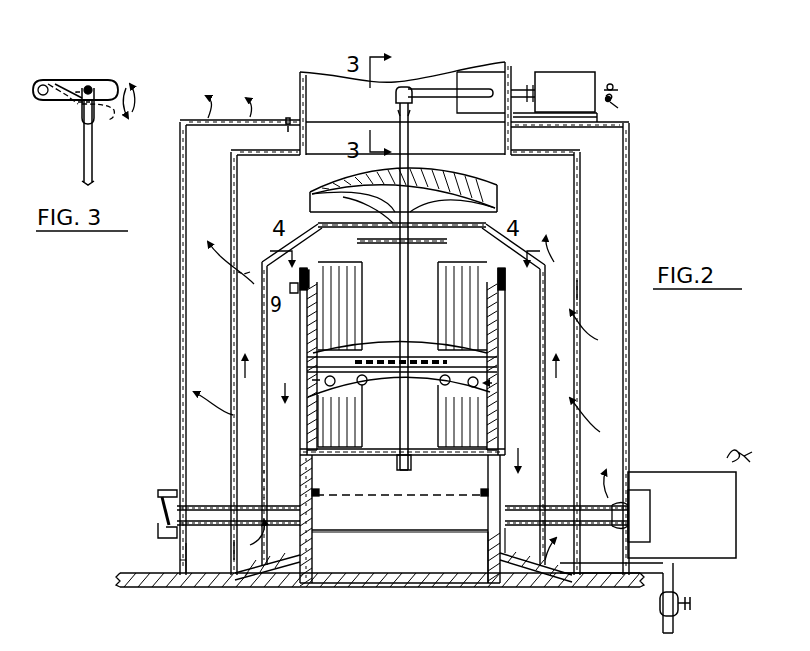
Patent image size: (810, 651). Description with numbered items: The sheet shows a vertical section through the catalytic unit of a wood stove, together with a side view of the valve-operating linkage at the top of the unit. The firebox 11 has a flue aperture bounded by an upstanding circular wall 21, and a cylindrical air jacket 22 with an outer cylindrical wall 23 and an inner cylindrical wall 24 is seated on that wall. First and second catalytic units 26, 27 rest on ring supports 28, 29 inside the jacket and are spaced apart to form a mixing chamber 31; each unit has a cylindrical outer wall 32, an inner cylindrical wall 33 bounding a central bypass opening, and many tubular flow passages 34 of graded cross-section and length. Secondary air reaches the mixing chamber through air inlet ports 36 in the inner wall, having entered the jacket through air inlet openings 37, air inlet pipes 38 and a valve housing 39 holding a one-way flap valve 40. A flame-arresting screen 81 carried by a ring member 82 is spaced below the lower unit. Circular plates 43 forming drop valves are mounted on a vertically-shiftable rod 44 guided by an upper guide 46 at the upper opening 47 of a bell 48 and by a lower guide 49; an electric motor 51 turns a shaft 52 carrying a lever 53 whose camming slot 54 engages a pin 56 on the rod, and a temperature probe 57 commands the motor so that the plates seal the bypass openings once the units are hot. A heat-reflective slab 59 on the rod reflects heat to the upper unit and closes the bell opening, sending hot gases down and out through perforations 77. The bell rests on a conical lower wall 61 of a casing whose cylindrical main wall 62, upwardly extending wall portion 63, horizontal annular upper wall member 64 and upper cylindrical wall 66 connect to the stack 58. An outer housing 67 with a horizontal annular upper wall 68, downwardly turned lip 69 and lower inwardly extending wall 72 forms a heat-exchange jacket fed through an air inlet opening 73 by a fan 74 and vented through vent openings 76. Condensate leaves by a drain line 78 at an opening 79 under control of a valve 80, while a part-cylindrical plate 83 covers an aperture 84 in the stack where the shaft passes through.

In FIG. 2, the firebox 11 is at (135, 572).
In FIG. 2, the upstanding circular wall 21 is at (318, 544).
In FIG. 2, the cylindrical air jacket 22 is at (318, 512).
In FIG. 2, the outer cylindrical wall 23 is at (264, 466).
In FIG. 2, the inner cylindrical wall 24 is at (490, 470).
In FIG. 2, the first catalytic unit 26 is at (328, 410).
In FIG. 2, the second catalytic unit 27 is at (318, 325).
In FIG. 2, the ring support 28 is at (318, 452).
In FIG. 2, the ring support 29 is at (318, 362).
In FIG. 2, the mixing chamber 31 is at (470, 376).
In FIG. 2, the cylindrical outer wall 32 is at (490, 322).
In FIG. 2, the inner cylindrical wall 33 is at (445, 270).
In FIG. 2, the tubular flow passages 34 is at (484, 306).
In FIG. 2, the air inlet ports 36 is at (342, 368).
In FIG. 2, the air inlet openings 37 is at (520, 556).
In FIG. 2, the air inlet pipe 38 is at (214, 505).
In FIG. 2, the valve housing 39 is at (166, 490).
In FIG. 2, the flap valve 40 is at (160, 500).
In FIG. 2, the circular plate 43 is at (486, 232).
In FIG. 3, the vertically-shiftable rod 44 is at (83, 148).
In FIG. 2, the vertically-shiftable rod 44 is at (409, 138).
In FIG. 2, the upper guide 46 is at (312, 193).
In FIG. 2, the upper opening 47 is at (452, 225).
In FIG. 2, the bell 48 is at (262, 284).
In FIG. 2, the lower guide 49 is at (396, 462).
In FIG. 2, the electric motor 51 is at (560, 78).
In FIG. 3, the shaft 52 is at (44, 86).
In FIG. 2, the shaft 52 is at (440, 90).
In FIG. 3, the lever 53 is at (62, 82).
In FIG. 3, the camming slot 54 is at (80, 86).
In FIG. 3, the pin 56 is at (98, 80).
In FIG. 2, the temperature probe 57 is at (312, 274).
In FIG. 2, the stack 58 is at (298, 90).
In FIG. 2, the heat-reflective slab 59 is at (324, 186).
In FIG. 2, the conical lower wall 61 is at (292, 568).
In FIG. 2, the cylindrical main wall 62 is at (578, 282).
In FIG. 2, the upwardly extending wall portion 63 is at (304, 570).
In FIG. 2, the horizontal annular upper wall member 64 is at (240, 148).
In FIG. 2, the upper cylindrical wall 66 is at (305, 128).
In FIG. 2, the outer housing 67 is at (629, 142).
In FIG. 2, the horizontal annular upper wall 68 is at (601, 122).
In FIG. 2, the downwardly turned lip 69 is at (288, 118).
In FIG. 2, the lower inwardly extending wall 72 is at (196, 560).
In FIG. 2, the air inlet opening 73 is at (614, 500).
In FIG. 2, the fan 74 is at (696, 468).
In FIG. 2, the vent openings 76 is at (208, 118).
In FIG. 2, the perforations 77 is at (266, 568).
In FIG. 2, the drain line 78 is at (675, 582).
In FIG. 2, the opening 79 is at (574, 562).
In FIG. 2, the valve 80 is at (690, 603).
In FIG. 2, the flame-arresting screen 81 is at (440, 500).
In FIG. 2, the ring member 82 is at (318, 490).
In FIG. 2, the part-cylindrical plate 83 is at (520, 54).
In FIG. 2, the aperture 84 is at (462, 80).